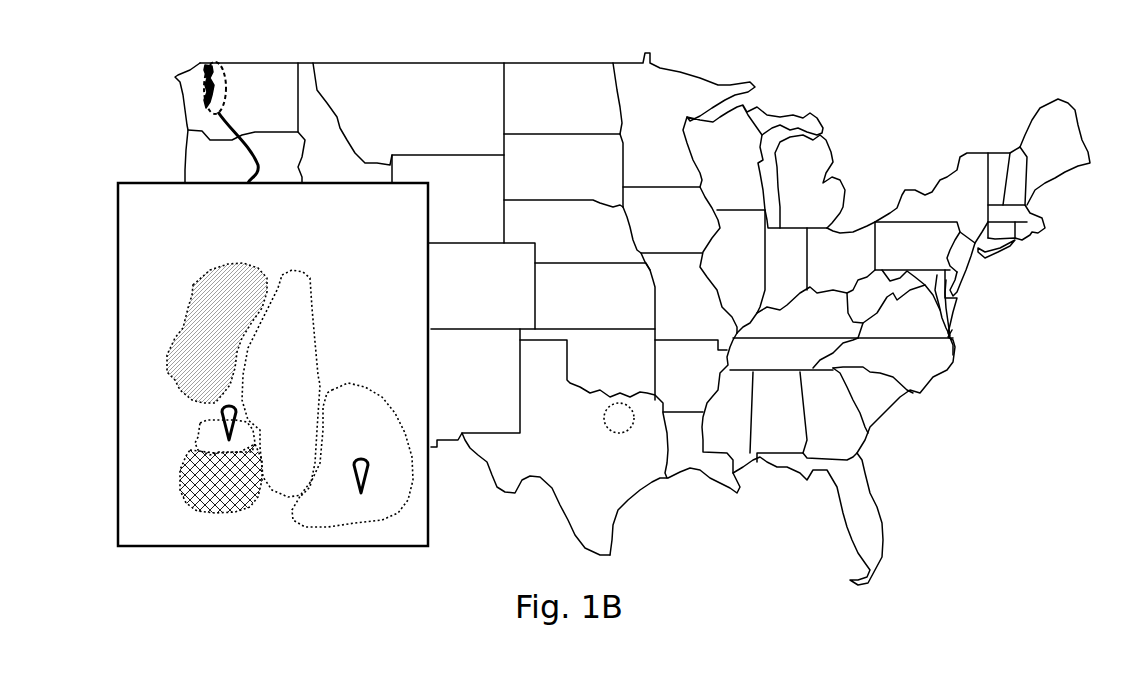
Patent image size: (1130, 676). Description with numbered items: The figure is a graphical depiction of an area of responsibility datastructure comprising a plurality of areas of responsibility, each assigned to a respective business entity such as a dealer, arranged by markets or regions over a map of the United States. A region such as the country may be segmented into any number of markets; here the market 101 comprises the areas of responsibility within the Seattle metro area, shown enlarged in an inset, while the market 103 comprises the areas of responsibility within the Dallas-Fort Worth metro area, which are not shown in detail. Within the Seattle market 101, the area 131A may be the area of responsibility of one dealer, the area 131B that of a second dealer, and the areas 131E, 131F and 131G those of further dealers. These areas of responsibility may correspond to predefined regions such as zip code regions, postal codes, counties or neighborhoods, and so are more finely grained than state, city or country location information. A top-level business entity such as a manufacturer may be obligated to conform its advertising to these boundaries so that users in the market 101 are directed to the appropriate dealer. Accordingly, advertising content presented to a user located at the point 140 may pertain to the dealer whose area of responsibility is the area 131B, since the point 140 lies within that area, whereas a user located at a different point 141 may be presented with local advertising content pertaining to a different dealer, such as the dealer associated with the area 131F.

The market 101 is at (274, 228).
The market 103 is at (604, 420).
The area 131A is at (203, 282).
The area 131B is at (345, 383).
The area 131E is at (308, 272).
The area 131F is at (221, 425).
The area 131G is at (242, 511).
The point 140 is at (367, 478).
The point 141 is at (216, 430).